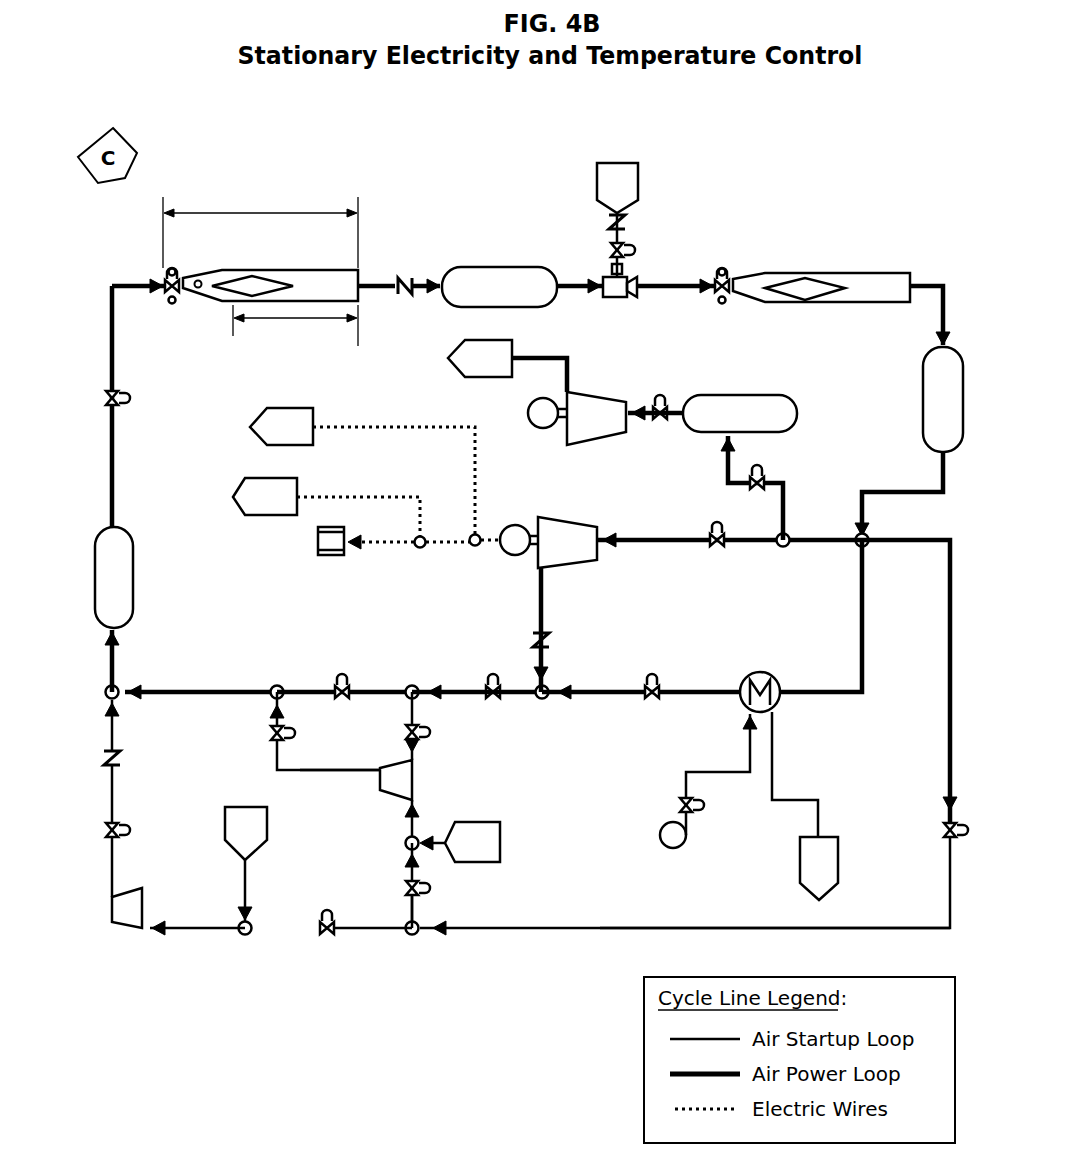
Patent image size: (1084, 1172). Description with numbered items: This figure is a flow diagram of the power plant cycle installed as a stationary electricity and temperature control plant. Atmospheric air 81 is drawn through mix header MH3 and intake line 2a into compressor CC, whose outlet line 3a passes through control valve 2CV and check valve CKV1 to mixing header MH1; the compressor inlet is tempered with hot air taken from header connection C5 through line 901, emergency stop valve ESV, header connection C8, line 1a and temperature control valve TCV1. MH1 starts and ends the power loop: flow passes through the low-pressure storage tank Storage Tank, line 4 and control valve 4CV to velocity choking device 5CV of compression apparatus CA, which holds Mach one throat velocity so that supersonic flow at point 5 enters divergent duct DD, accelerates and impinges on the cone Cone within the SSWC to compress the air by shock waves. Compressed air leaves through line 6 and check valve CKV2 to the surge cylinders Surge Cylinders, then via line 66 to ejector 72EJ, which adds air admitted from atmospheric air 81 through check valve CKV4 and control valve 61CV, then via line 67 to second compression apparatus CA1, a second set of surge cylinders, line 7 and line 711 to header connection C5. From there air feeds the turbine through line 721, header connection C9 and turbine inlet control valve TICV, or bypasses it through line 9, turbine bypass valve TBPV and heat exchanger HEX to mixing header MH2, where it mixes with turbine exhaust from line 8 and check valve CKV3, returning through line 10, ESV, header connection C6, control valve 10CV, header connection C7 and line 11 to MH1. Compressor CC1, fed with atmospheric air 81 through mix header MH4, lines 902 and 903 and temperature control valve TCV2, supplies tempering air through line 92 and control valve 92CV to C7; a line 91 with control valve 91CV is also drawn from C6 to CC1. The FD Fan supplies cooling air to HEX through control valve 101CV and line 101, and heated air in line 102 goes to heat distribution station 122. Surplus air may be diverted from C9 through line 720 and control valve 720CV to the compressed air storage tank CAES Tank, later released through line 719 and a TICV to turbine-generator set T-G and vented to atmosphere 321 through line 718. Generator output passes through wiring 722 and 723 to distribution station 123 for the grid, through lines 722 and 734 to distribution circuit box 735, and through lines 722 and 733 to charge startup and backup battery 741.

The control valve 4CV is at (103, 398).
The velocity choking device 5CV is at (174, 300).
The compression apparatus CA is at (260, 268).
The divergent duct DD is at (203, 299).
The point 5 is at (197, 278).
The cone Cone is at (242, 280).
The element SSWC is at (295, 326).
The line 6 is at (380, 295).
The check valve CKV2 is at (400, 280).
The surge cylinders Surge Cylinders is at (520, 268).
The line 66 is at (562, 297).
The ejector 72EJ is at (618, 300).
The line 67 is at (668, 295).
The atmospheric air 81 is at (640, 187).
The check valve CKV4 is at (627, 226).
The control valve 61CV is at (630, 252).
The second compression apparatus CA1 is at (840, 272).
The line 7 is at (932, 304).
The line 711 is at (916, 492).
The header connection C5 is at (870, 548).
The emergency stop valve ESV is at (940, 830).
The line 901 is at (490, 935).
The connecting header C8 is at (420, 936).
The line 1a is at (383, 935).
The inlet air temperature control valve TCV1 is at (327, 937).
The mix header MH3 is at (251, 936).
The intake pipe 2a is at (188, 935).
The compressor CC is at (128, 932).
The line 3a is at (110, 872).
The control valve 2CV is at (106, 831).
The check valve CKV1 is at (106, 758).
The mixing header MH1 is at (104, 700).
The line 4 is at (102, 672).
The low-pressure storage tank Storage Tank is at (133, 573).
The line 11 is at (198, 698).
The header connection C7 is at (280, 684).
The control valve 10CV is at (347, 684).
The header connection C6 is at (416, 684).
The line 10 is at (517, 698).
The mixing header MH2 is at (550, 699).
The turbine bypass valve TBPV is at (660, 684).
The indirect heat exchanger HEX is at (771, 675).
The line 9 is at (866, 586).
The line 721 is at (835, 547).
The turbine inlet control valve TICV is at (715, 550).
The connection header C9 is at (778, 548).
The line 720 is at (787, 515).
The control valve 720CV is at (764, 476).
The CAES tank CAES Tank is at (751, 396).
The line 719 is at (640, 418).
The turbine-generator set T-G is at (562, 436).
The line 718 is at (560, 363).
The atmosphere 321 is at (445, 361).
The line 8 is at (548, 600).
The check valve CKV3 is at (552, 640).
The distribution station 123 is at (250, 433).
The wiring 723 is at (394, 480).
The wiring 722 is at (490, 548).
The distribution circuit box 735 is at (240, 506).
The line 734 is at (408, 497).
The line 733 is at (410, 551).
The startup and backup battery 741 is at (329, 556).
The control valve 92CV is at (272, 742).
The line 92 is at (312, 770).
The oil-free centrifugal compressor CC1 is at (380, 785).
The line 91 is at (414, 711).
The control valve 91CV is at (422, 736).
The line 903 is at (416, 819).
The mix header MH4 is at (404, 843).
The air temperature control valve TCV2 is at (402, 888).
The line 902 is at (416, 916).
The forced draft fan FD Fan is at (661, 841).
The line 101 is at (747, 744).
The control valve 101CV is at (675, 806).
The line 102 is at (776, 750).
The heat distribution station 122 is at (800, 868).